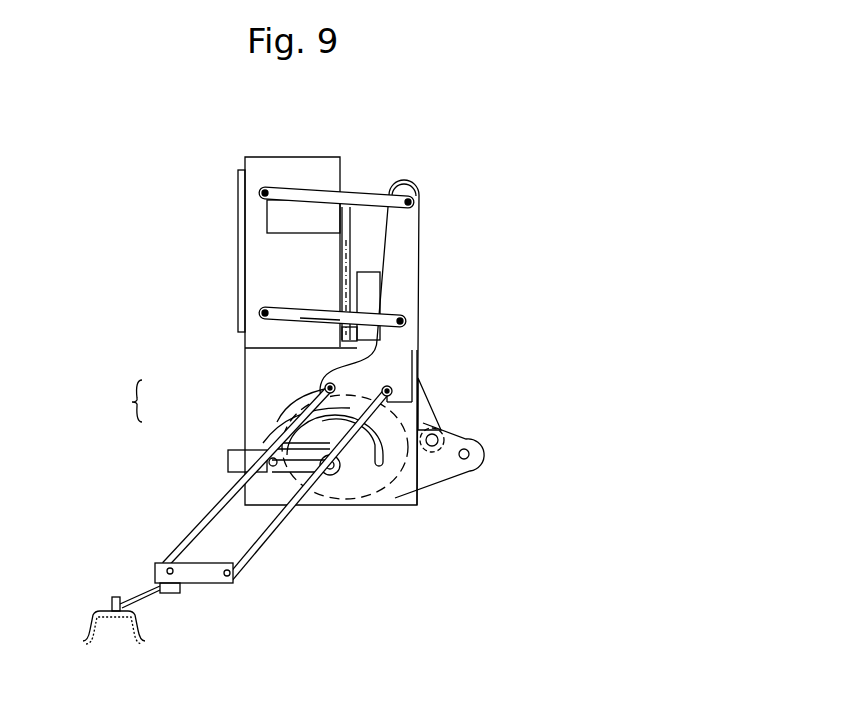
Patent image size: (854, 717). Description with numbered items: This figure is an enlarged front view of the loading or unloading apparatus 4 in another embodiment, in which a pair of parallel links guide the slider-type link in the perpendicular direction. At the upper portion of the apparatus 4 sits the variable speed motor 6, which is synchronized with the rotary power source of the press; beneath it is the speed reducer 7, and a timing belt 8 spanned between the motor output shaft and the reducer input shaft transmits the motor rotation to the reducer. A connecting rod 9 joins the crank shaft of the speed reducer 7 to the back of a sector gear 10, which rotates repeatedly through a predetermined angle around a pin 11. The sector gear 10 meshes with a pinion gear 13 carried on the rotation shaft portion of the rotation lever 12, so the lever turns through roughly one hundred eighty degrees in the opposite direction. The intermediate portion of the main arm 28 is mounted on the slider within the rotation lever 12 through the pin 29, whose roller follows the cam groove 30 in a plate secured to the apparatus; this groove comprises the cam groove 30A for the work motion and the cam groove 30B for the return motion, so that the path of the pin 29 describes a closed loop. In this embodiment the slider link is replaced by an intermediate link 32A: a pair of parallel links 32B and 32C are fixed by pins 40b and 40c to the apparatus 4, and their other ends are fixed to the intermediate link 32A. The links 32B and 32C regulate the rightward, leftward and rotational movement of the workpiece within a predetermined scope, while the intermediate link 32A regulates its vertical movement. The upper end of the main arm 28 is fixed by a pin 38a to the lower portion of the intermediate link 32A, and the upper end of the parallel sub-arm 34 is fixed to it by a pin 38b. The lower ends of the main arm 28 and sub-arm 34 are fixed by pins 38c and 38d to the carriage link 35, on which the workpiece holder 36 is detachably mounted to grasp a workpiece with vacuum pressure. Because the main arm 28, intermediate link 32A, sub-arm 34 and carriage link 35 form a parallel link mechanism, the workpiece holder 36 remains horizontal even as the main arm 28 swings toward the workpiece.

The loading or unloading apparatus 4 is at (226, 354).
The variable speed motor 6 is at (292, 236).
The speed reducer 7 is at (371, 272).
The timing belt 8 is at (340, 258).
The connecting rod 9 is at (426, 412).
The sector gear 10 is at (448, 478).
The pin 11 is at (470, 447).
The rotation lever 12 is at (327, 484).
The pinion gear 13 is at (345, 477).
The main arm 28 is at (212, 512).
The pin 29 is at (240, 440).
The cam groove 30 is at (123, 401).
The cam groove for a work motion 30A is at (272, 408).
The cam groove for a return motion 30B is at (270, 420).
The intermediate link 32A is at (410, 290).
The parallel link 32B is at (325, 320).
The parallel link 32C is at (368, 192).
The sub-arm 34 is at (265, 537).
The carriage link 35 is at (160, 565).
The workpiece holder 36 is at (130, 595).
The pin 38a is at (322, 383).
The pin 38b is at (385, 388).
The pin 38c is at (168, 567).
The pin 38d is at (229, 580).
The pin 40b is at (265, 313).
The pin 40c is at (265, 193).